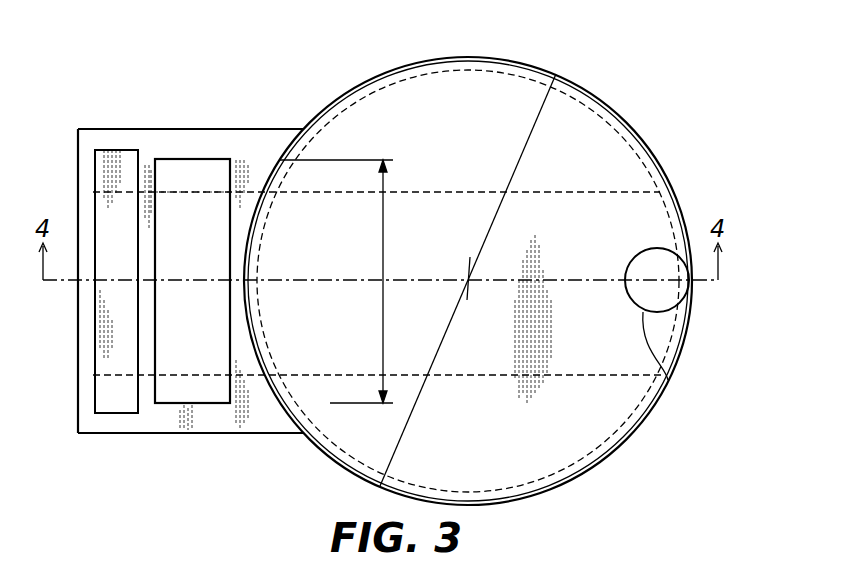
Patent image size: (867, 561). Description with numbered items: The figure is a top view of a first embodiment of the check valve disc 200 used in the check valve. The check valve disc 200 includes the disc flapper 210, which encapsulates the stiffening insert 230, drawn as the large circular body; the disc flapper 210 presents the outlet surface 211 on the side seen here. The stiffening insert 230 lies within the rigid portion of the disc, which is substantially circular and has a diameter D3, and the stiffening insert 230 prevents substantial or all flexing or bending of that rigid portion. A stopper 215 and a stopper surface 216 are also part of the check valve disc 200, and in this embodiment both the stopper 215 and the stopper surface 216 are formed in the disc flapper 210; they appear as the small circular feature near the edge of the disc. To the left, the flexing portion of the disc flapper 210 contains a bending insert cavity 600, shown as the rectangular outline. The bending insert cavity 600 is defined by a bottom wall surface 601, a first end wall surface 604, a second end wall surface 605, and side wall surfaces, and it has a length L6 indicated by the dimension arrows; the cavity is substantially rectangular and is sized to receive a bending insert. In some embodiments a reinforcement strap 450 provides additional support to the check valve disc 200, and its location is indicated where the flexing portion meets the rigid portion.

The check valve disc 200 is at (590, 87).
The disc flapper 210 is at (607, 118).
The outlet surface 211 is at (622, 180).
The stopper 215 is at (668, 380).
The stopper surface 216 is at (660, 298).
The stiffening insert 230 is at (443, 72).
The reinforcement strap 450 is at (212, 192).
The bending insert cavity 600 is at (175, 380).
The bottom wall surface 601 is at (220, 342).
The first end wall surface 604 is at (192, 397).
The second end wall surface 605 is at (192, 176).
The diameter D3 is at (496, 206).
The length L6 is at (338, 281).